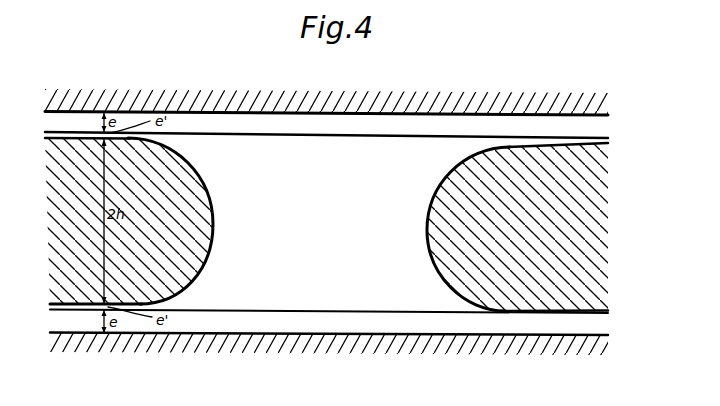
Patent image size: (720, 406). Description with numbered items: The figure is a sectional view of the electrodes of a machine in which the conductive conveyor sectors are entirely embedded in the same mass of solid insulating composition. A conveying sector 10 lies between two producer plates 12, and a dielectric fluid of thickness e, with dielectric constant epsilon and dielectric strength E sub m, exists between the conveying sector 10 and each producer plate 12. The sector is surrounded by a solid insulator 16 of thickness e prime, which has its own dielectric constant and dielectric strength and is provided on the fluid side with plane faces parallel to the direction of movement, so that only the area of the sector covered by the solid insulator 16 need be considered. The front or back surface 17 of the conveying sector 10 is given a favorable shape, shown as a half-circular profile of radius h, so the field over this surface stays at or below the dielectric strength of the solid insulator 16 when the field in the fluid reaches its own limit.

The conveying sector 10 is at (67, 213).
The producer plate 12 is at (373, 103).
The solid insulator 16 is at (383, 172).
The front or back surface 17 is at (215, 212).